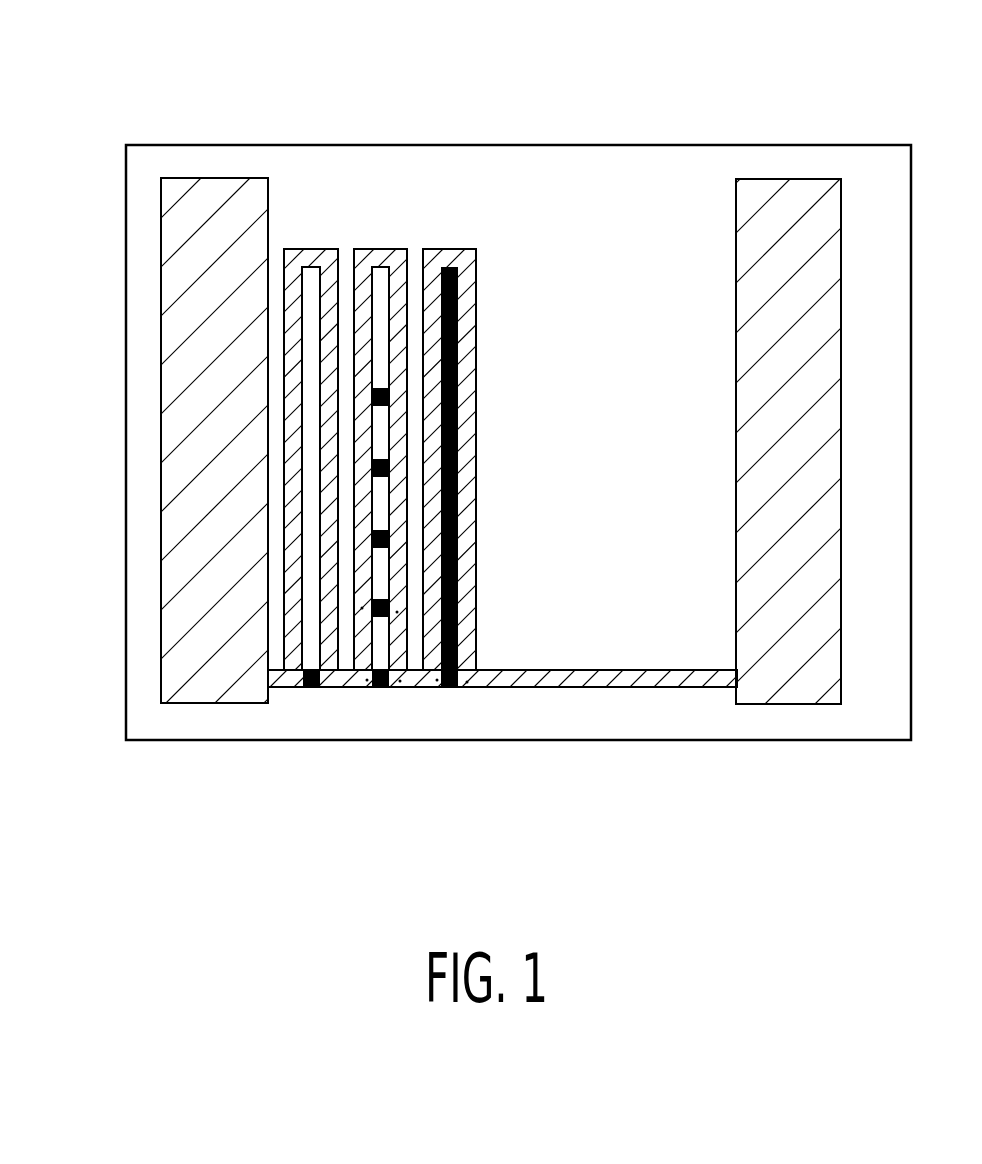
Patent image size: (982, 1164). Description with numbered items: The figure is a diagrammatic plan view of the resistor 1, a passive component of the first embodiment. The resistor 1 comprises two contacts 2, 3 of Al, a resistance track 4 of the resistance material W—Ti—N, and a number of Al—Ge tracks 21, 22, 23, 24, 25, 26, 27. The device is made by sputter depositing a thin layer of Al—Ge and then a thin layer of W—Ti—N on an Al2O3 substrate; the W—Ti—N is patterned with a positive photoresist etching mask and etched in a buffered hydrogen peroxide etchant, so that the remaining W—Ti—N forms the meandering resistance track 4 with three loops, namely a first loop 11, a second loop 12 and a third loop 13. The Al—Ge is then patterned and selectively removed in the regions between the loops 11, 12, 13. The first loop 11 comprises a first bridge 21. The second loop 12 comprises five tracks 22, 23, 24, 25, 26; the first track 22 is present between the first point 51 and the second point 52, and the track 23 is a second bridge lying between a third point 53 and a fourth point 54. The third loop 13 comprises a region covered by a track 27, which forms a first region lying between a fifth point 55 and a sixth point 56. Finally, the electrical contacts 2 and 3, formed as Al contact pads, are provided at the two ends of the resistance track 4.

The resistor 1 is at (85, 98).
The contact 2 is at (220, 680).
The contact 3 is at (798, 682).
The resistance track 4 is at (557, 680).
The first loop 11 is at (311, 257).
The second loop 12 is at (384, 257).
The third loop 13 is at (457, 257).
The first bridge 21 is at (312, 687).
The first track 22 is at (382, 687).
The second bridge 23 is at (389, 603).
The track 24 is at (389, 537).
The track 25 is at (389, 469).
The track 26 is at (389, 397).
The track 27 is at (452, 687).
The first point 51 is at (367, 680).
The second point 52 is at (400, 687).
The third point 53 is at (362, 608).
The fourth point 54 is at (397, 612).
The fifth point 55 is at (437, 680).
The sixth point 56 is at (467, 682).